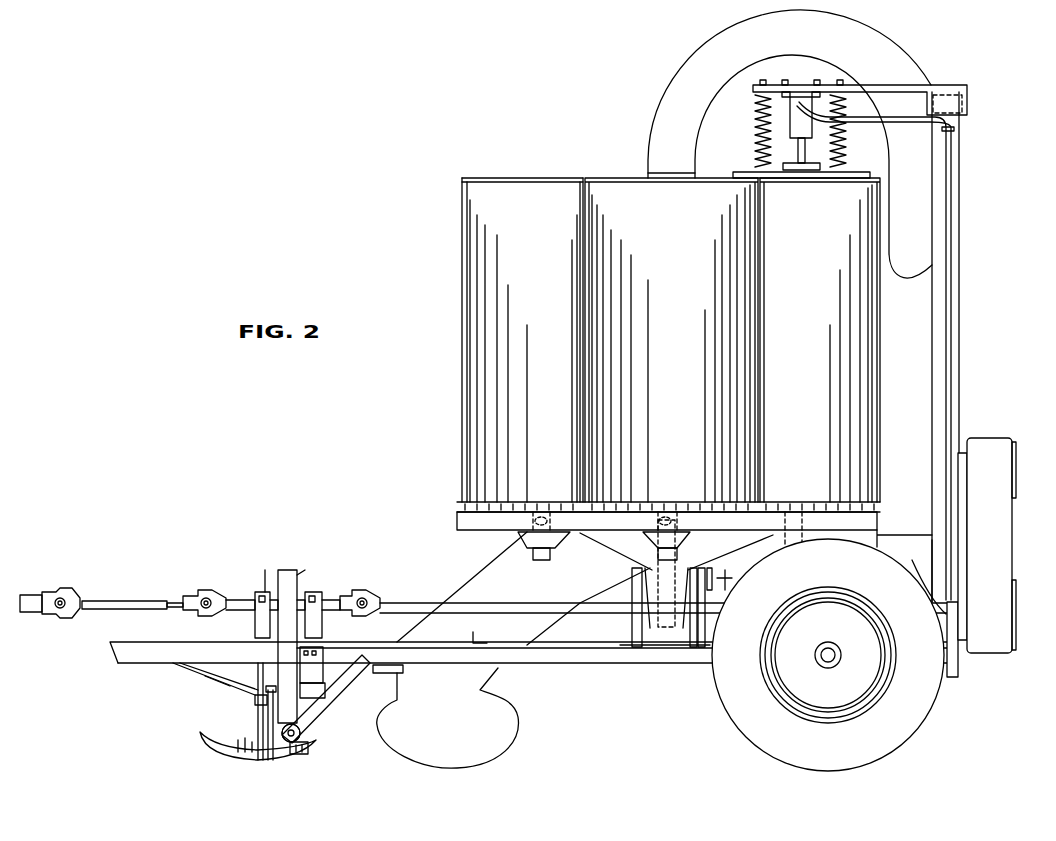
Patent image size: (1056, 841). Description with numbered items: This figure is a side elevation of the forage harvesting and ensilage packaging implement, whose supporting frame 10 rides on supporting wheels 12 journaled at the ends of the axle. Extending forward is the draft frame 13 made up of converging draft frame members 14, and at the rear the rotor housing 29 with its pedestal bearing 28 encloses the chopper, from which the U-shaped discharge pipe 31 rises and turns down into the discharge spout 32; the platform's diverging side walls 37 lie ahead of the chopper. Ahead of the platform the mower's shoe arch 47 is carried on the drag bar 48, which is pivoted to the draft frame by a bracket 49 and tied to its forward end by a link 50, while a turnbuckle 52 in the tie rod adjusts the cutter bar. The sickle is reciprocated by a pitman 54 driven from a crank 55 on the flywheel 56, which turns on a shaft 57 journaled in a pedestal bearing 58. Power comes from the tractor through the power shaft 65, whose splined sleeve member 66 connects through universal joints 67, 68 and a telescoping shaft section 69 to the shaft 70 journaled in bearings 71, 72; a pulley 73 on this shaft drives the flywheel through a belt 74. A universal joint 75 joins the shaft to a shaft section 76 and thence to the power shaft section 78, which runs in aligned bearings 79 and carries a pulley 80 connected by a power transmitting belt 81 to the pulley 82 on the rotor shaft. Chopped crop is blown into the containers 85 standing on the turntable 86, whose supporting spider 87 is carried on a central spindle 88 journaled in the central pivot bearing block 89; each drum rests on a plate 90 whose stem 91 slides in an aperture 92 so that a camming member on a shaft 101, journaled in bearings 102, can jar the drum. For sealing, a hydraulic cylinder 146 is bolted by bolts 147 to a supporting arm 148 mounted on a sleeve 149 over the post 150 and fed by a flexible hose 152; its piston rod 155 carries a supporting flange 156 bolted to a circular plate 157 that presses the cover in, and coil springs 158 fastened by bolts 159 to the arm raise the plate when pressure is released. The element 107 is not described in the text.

The supporting frame 10 is at (620, 676).
The supporting wheels 12 is at (745, 726).
The draft frame 13 is at (112, 640).
The draft frame members 14 is at (142, 656).
The pedestal bearing 28 is at (966, 500).
The housing 29 is at (916, 374).
The discharge pipe 31 is at (916, 212).
The discharge spout 32 is at (646, 162).
The side walls 37 is at (490, 578).
The shoe arch 47 is at (250, 736).
The drag bar 48 is at (338, 704).
The bracket 49 is at (402, 675).
The link 50 is at (198, 672).
The turnbuckle 52 is at (228, 690).
The pitman 54 is at (290, 752).
The crank 55 is at (266, 692).
The flywheel 56 is at (302, 736).
The shaft 57 is at (338, 693).
The pedestal bearing 58 is at (324, 662).
The power shaft 65 is at (104, 594).
The splined sleeve member 66 is at (34, 594).
The universal joint 67 is at (60, 590).
The universal joint 68 is at (208, 592).
The telescoping shaft section 69 is at (140, 600).
The shaft 70 is at (256, 598).
The bearing 71 is at (269, 570).
The bearing 72 is at (322, 596).
The pulley 73 is at (311, 561).
The belt 74 is at (280, 646).
The universal joint 75 is at (370, 592).
The shaft section 76 is at (422, 602).
The power shaft section 78 is at (920, 578).
The bearings 79 is at (958, 634).
The pulley 80 is at (1018, 607).
The power transmitting belt 81 is at (1012, 524).
The pulley 82 is at (1020, 440).
The containers 85 is at (558, 192).
The turntable 86 is at (450, 514).
The supporting spider 87 is at (612, 543).
The central spindle 88 is at (632, 597).
The central pivot bearing block 89 is at (648, 628).
The plate 90 is at (503, 503).
The stem 91 is at (540, 562).
The aperture 92 is at (532, 522).
The shaft 101 is at (716, 576).
The bearings 102 is at (702, 566).
The auger tube 107 is at (630, 590).
The hydraulic cylinder 146 is at (789, 126).
The bolts 147 is at (817, 79).
The supporting arm 148 is at (902, 84).
The sleeve 149 is at (968, 101).
The post 150 is at (960, 175).
The flexible hose 152 is at (876, 120).
The piston rod 155 is at (797, 150).
The supporting flange 156 is at (814, 172).
The circular plate 157 is at (740, 180).
The coil springs 158 is at (756, 108).
The bolts 159 is at (764, 79).